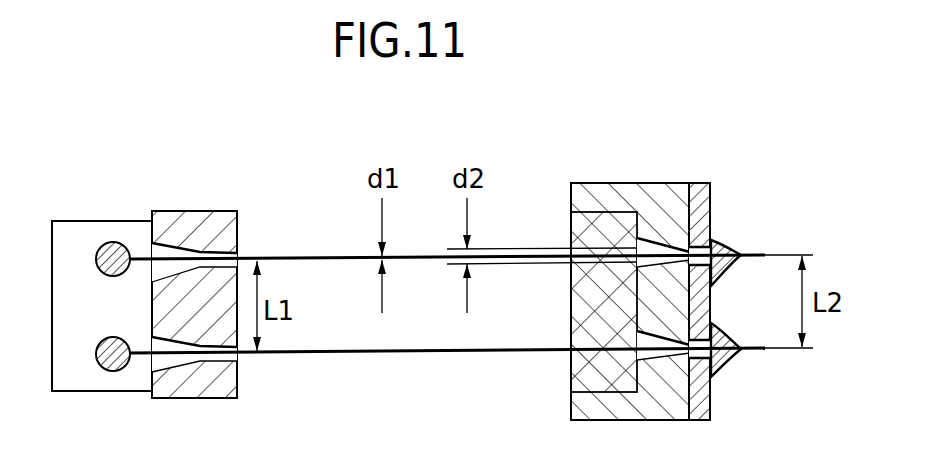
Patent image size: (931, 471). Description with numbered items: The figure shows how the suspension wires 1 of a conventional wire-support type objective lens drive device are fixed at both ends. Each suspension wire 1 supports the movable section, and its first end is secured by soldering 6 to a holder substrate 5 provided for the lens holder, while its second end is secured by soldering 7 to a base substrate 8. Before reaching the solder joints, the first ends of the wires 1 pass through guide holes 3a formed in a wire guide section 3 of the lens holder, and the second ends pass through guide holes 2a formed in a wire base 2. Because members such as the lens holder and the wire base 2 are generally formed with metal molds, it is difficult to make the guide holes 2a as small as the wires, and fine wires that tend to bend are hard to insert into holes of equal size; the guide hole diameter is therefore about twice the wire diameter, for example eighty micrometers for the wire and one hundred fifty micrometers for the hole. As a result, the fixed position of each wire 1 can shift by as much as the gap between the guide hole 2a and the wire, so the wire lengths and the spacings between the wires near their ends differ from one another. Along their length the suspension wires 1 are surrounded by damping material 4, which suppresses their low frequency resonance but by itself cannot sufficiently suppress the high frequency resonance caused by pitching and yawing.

The suspension wire 1 is at (336, 255).
The wire base 2 is at (620, 193).
The guide hole 2a is at (637, 263).
The wire guide section 3 is at (213, 215).
The guide hole 3a is at (240, 268).
The damping material 4 is at (580, 375).
The holder substrate 5 is at (67, 233).
The soldering 6 is at (116, 250).
The soldering 7 is at (719, 240).
The base substrate 8 is at (698, 195).